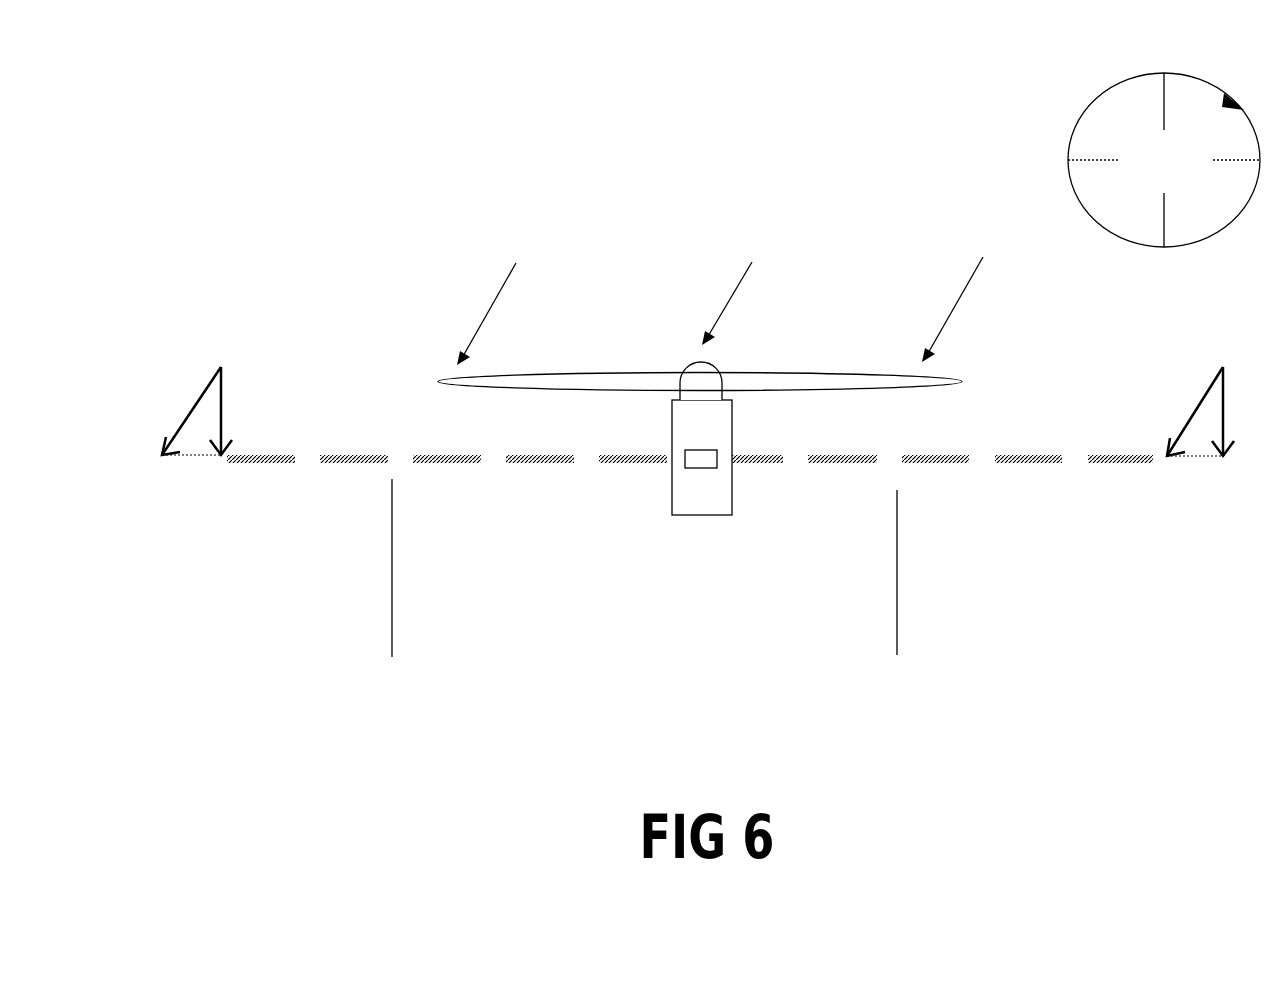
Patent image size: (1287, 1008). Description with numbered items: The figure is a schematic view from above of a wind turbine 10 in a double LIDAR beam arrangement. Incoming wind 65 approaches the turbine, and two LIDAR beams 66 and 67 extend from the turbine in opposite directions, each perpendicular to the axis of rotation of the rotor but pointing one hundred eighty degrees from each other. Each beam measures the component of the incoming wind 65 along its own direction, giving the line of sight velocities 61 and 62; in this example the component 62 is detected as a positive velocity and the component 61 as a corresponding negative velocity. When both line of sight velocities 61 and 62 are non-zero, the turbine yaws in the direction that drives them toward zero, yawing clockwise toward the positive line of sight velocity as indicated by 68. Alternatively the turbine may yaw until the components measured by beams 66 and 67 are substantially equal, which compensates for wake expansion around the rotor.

The aircraft body 10 is at (694, 482).
The line of sight velocity 61 is at (206, 463).
The line of sight velocity 62 is at (1192, 461).
The incoming wind 65 is at (720, 276).
The beam 66 is at (402, 591).
The beam 67 is at (906, 596).
The yaw direction indication 68 is at (1164, 160).